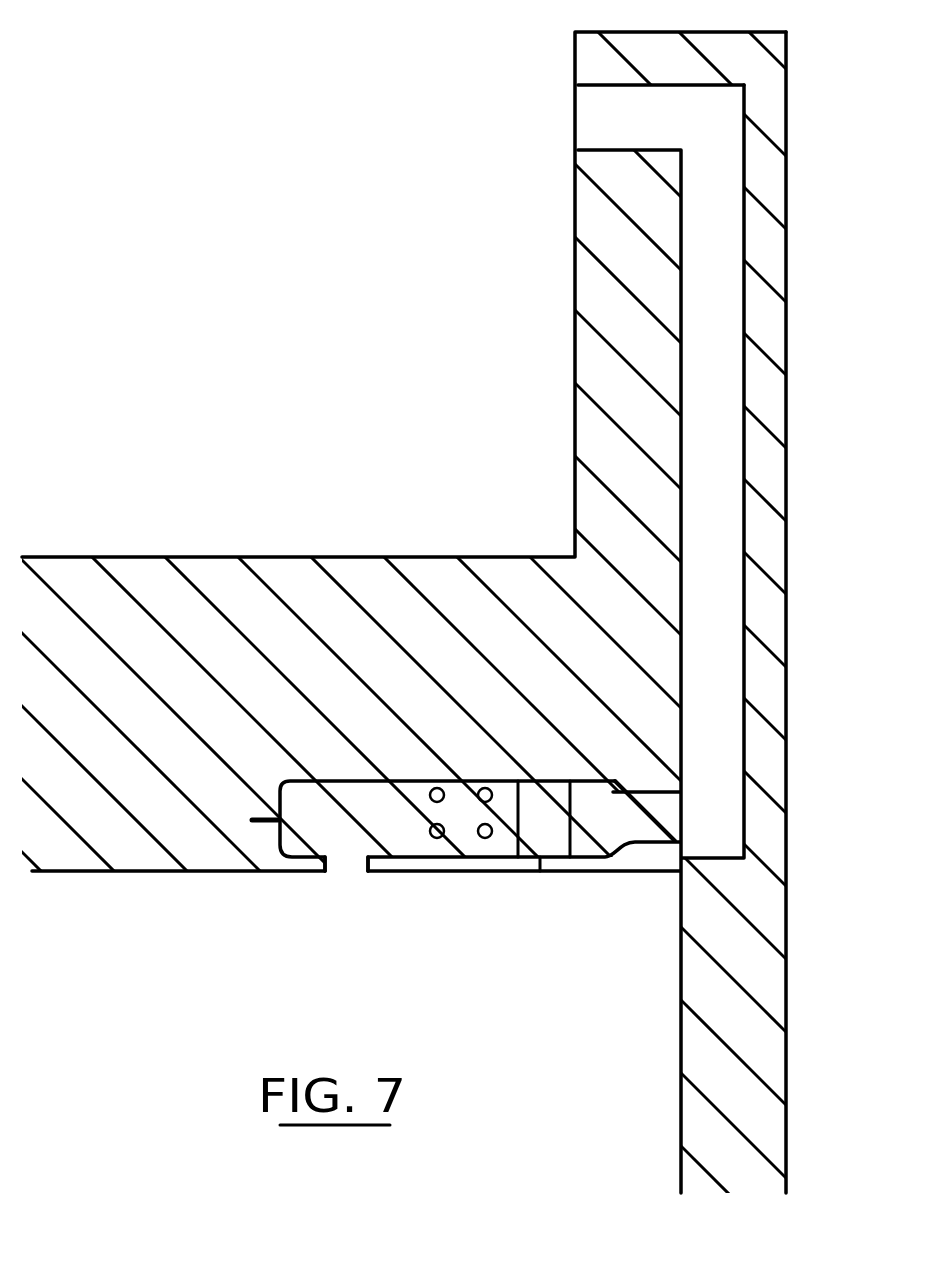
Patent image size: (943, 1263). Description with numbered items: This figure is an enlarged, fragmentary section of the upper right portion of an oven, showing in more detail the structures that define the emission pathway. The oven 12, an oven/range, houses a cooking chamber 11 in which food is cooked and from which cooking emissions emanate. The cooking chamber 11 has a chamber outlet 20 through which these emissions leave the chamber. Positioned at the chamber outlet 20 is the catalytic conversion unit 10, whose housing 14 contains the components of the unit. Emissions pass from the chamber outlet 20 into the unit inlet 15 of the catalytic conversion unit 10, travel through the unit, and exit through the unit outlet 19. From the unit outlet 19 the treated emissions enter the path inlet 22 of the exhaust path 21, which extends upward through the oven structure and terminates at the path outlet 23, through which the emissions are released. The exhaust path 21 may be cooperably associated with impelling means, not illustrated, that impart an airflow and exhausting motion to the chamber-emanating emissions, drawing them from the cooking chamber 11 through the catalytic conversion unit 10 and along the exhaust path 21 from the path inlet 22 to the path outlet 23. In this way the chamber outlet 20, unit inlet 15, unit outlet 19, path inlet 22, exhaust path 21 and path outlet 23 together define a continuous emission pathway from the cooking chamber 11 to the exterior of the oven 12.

The catalytic conversion unit 10 is at (584, 860).
The cooking chamber 11 is at (206, 951).
The oven 12 is at (212, 557).
The housing 14 is at (447, 893).
The unit inlet 15 is at (344, 899).
The chamber outlet 20 is at (345, 870).
The unit outlet 19 is at (741, 811).
The path inlet 22 is at (741, 811).
The exhaust path 21 is at (712, 431).
The path outlet 23 is at (575, 116).